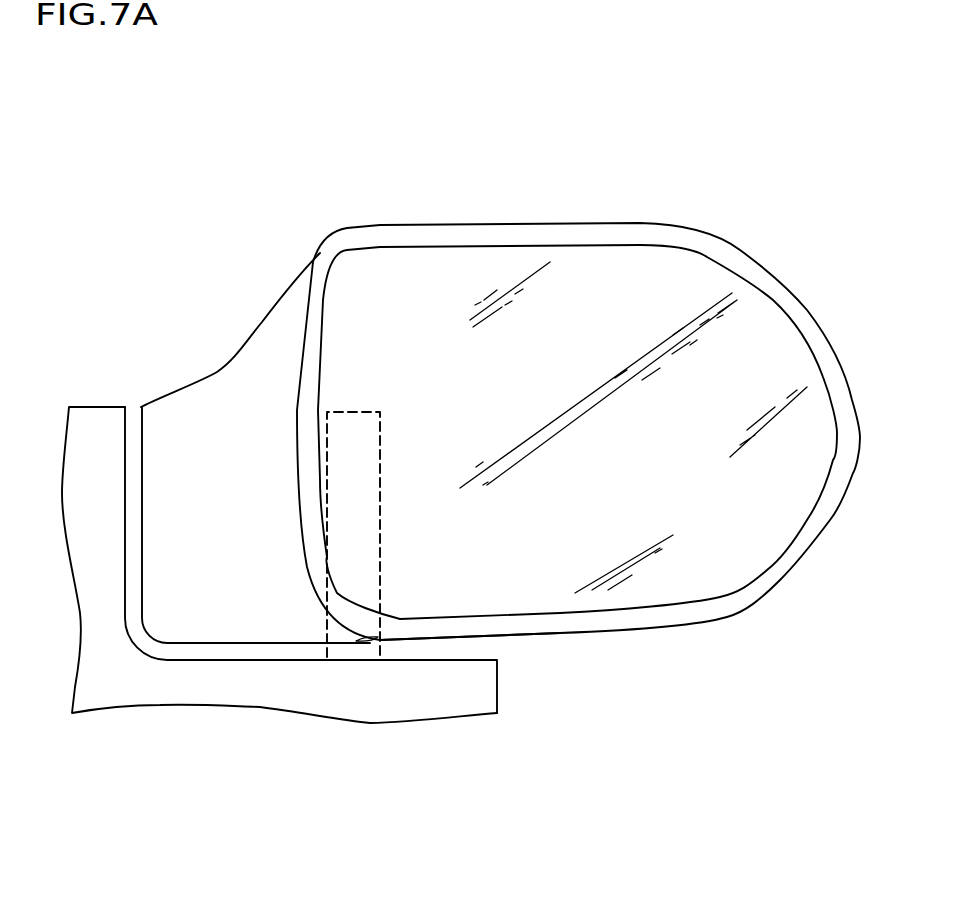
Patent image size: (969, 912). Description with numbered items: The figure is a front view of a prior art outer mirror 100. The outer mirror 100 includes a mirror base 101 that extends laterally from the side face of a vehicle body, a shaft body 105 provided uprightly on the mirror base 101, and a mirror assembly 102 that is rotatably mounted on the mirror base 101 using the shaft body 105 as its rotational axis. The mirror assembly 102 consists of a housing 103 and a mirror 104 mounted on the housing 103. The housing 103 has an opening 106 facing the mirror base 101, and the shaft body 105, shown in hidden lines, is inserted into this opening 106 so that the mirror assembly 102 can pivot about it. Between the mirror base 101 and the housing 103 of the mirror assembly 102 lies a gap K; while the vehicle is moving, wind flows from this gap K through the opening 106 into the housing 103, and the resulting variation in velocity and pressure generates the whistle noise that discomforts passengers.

The outer mirror 100 is at (578, 402).
The mirror base 101 is at (142, 695).
The mirror assembly 102 is at (697, 635).
The housing 103 is at (578, 636).
The mirror 104 is at (770, 512).
The shaft body 105 is at (323, 627).
The opening 106 is at (358, 641).
The gap K is at (498, 650).